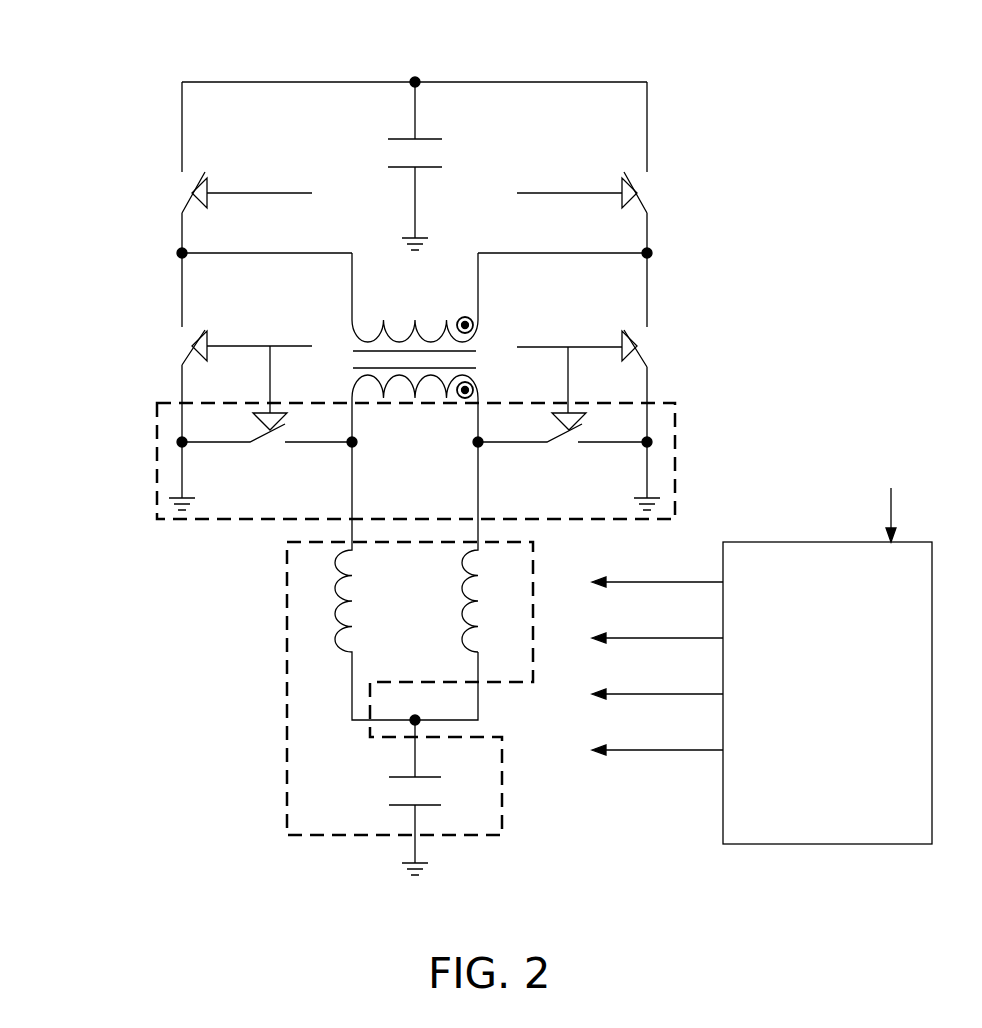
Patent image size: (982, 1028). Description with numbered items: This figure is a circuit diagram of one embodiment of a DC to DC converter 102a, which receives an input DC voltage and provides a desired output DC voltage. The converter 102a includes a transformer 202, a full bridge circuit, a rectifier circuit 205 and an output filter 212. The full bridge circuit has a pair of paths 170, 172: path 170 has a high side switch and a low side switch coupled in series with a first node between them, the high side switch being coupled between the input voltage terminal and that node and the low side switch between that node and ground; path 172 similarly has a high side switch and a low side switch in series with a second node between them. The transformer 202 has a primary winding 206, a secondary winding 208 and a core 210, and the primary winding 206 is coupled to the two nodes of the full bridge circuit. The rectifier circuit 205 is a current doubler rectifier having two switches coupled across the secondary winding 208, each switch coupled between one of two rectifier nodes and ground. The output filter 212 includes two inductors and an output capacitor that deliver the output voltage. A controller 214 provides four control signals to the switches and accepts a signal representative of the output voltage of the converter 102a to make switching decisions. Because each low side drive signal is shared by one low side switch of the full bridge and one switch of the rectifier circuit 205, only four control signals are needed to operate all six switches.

The DC to DC converter 102a is at (122, 63).
The path 170 is at (157, 229).
The path 172 is at (670, 236).
The transformer 202 is at (333, 318).
The rectifier circuit 205 is at (157, 453).
The primary winding 206 is at (391, 334).
The secondary winding 208 is at (478, 385).
The core 210 is at (356, 370).
The output filter 212 is at (287, 805).
The controller 214 is at (758, 844).